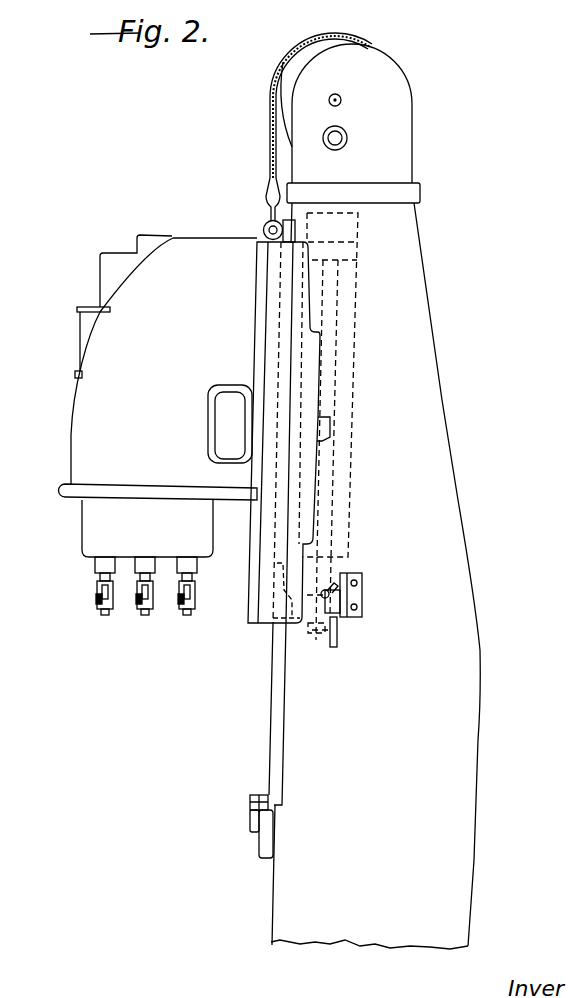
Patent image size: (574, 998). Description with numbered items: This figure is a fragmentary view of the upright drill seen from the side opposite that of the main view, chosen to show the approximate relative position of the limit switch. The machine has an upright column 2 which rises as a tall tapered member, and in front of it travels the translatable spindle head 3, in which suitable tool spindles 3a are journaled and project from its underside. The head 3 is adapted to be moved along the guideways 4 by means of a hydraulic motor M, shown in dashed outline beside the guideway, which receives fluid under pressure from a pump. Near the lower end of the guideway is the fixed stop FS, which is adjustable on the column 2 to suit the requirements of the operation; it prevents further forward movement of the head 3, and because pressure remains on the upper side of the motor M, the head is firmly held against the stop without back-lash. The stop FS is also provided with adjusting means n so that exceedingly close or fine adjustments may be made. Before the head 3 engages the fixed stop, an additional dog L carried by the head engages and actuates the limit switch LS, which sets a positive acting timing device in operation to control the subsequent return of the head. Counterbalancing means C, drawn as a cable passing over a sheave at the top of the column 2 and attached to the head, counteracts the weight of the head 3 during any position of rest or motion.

The upright column 2 is at (375, 496).
The counterbalancing means C is at (272, 89).
The translatable spindle head 3 is at (78, 455).
The tool spindles 3a is at (105, 612).
The guideways 4 is at (274, 690).
The hydraulic motor M is at (352, 372).
The dog L is at (330, 428).
The limit switch LS is at (362, 596).
The adjusting means n is at (250, 801).
The fixed stop FS is at (259, 836).